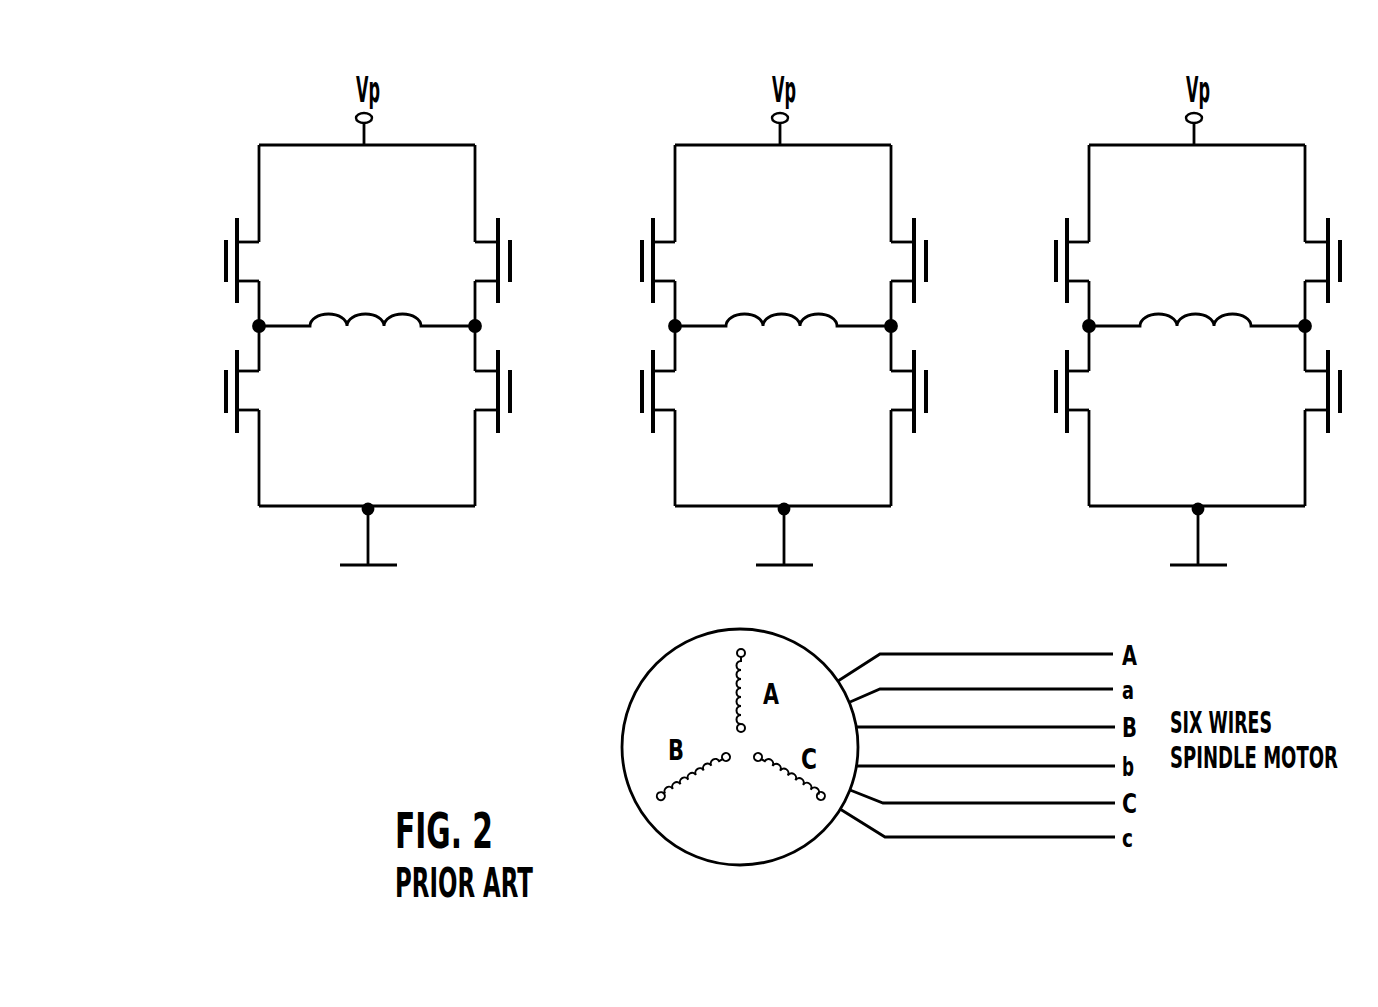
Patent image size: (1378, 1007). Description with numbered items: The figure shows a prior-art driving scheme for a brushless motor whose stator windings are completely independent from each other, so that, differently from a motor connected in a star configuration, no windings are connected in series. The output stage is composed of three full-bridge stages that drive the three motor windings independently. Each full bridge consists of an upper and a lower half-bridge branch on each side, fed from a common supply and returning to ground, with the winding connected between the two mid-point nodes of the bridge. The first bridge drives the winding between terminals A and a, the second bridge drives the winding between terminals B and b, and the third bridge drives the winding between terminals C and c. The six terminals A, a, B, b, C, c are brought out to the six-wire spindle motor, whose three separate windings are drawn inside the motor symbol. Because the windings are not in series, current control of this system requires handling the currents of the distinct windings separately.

The phase A winding terminal A is at (237, 327).
The phase a winding terminal a is at (495, 329).
The phase B winding terminal B is at (653, 327).
The phase b winding terminal b is at (911, 327).
The phase C winding terminal C is at (1067, 327).
The phase c winding terminal c is at (1324, 329).